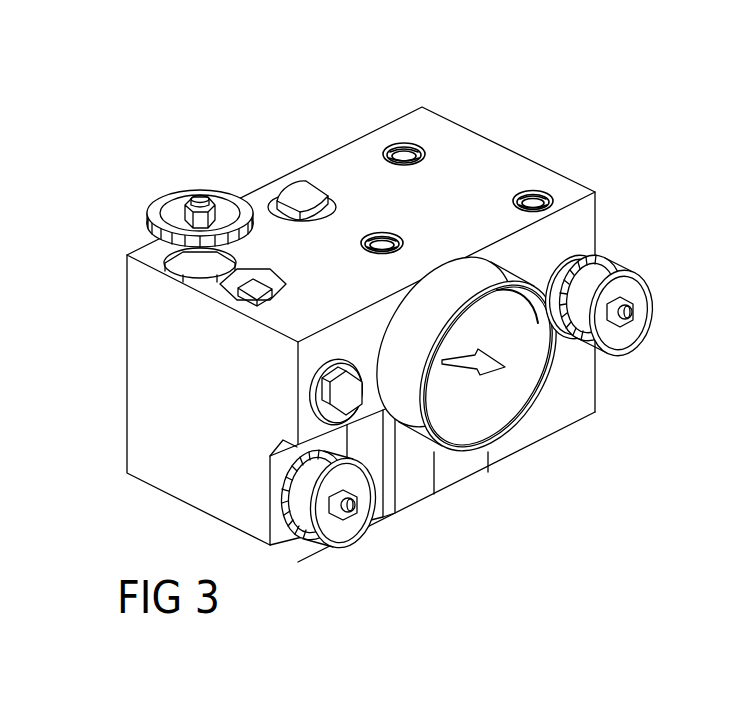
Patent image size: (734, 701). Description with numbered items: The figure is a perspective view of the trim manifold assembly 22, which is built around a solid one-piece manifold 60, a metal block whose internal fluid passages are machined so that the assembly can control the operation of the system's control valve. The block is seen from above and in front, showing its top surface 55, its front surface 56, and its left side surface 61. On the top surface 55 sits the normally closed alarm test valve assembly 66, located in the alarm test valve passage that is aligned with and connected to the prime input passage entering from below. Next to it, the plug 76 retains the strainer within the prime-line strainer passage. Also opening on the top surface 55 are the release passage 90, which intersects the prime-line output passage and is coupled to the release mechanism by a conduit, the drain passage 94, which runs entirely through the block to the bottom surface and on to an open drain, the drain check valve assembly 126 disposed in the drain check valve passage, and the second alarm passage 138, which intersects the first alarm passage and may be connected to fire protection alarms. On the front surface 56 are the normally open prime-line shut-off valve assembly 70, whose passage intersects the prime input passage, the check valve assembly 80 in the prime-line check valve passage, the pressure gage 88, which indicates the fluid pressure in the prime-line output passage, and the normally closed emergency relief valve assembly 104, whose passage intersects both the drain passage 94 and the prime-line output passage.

The trim manifold assembly 22 is at (399, 312).
The top surface 55 is at (468, 160).
The front surface 56 is at (570, 225).
The manifold 60 is at (228, 497).
The left side surface 61 is at (163, 393).
The alarm test valve assembly 66 is at (191, 191).
The prime-line shut-off valve assembly 70 is at (334, 530).
The plug 76 is at (238, 292).
The check valve assembly 80 is at (343, 400).
The pressure gage 88 is at (530, 372).
The release passage 90 is at (373, 235).
The drain passage 94 is at (530, 190).
The emergency relief valve assembly 104 is at (632, 290).
The drain check valve assembly 126 is at (288, 195).
The second alarm passage 138 is at (403, 150).